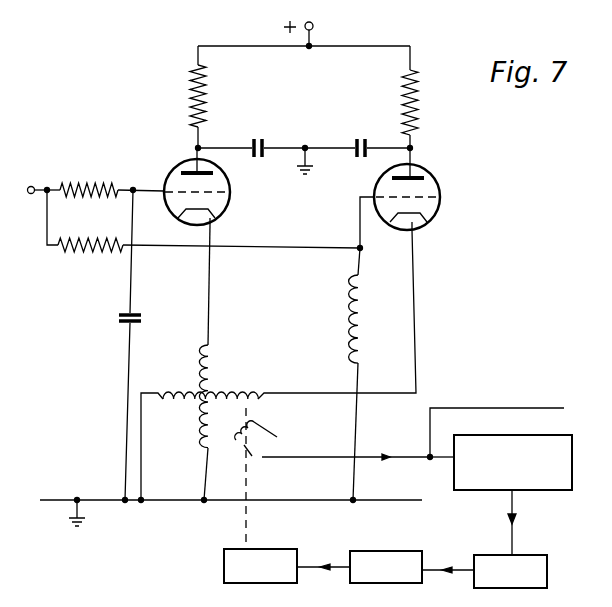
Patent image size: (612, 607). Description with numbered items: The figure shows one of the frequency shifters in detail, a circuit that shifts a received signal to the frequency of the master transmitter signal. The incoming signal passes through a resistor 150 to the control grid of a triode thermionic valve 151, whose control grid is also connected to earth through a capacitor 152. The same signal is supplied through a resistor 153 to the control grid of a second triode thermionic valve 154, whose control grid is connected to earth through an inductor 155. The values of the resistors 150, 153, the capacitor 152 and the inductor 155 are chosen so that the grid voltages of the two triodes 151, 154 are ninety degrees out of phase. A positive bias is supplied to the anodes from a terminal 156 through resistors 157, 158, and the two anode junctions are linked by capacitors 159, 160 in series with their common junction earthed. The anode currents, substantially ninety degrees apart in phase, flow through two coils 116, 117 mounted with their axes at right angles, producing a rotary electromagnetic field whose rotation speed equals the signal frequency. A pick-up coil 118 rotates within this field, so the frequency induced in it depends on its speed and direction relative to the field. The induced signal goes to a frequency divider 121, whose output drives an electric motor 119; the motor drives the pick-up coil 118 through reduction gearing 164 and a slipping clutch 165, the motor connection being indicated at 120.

The coil 116 is at (226, 362).
The coil 117 is at (278, 365).
The pick-up coil 118 is at (269, 478).
The electric motor 119 is at (482, 555).
The motor drive connection 120 is at (512, 535).
The frequency divider 121 is at (572, 442).
The resistor 150 is at (112, 179).
The triode thermionic valve 151 is at (183, 171).
The capacitor 152 is at (110, 345).
The resistor 153 is at (203, 233).
The triode thermionic valve 154 is at (440, 197).
The inductor 155 is at (376, 374).
The terminal 156 is at (319, 32).
The resistor 157 is at (181, 97).
The resistor 158 is at (430, 97).
The capacitor 159 is at (251, 137).
The capacitor 160 is at (357, 137).
The reduction gearing 164 is at (420, 551).
The slipping clutch 165 is at (292, 549).